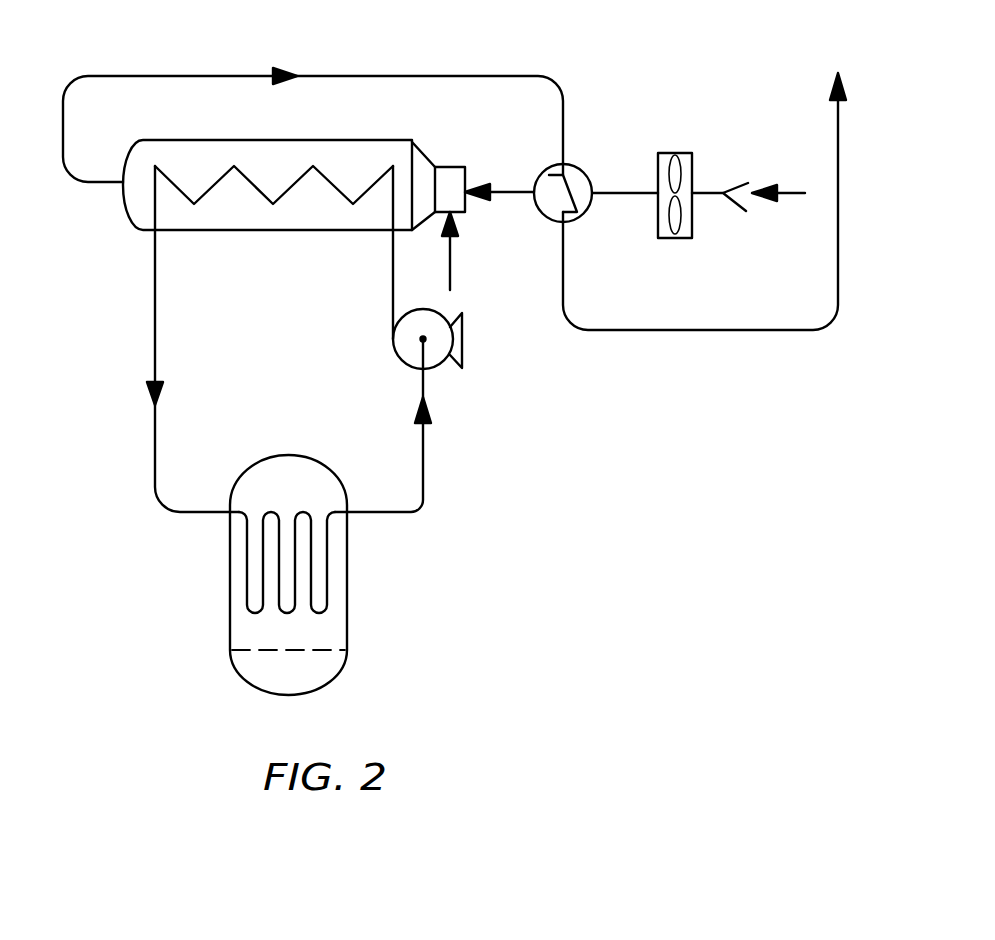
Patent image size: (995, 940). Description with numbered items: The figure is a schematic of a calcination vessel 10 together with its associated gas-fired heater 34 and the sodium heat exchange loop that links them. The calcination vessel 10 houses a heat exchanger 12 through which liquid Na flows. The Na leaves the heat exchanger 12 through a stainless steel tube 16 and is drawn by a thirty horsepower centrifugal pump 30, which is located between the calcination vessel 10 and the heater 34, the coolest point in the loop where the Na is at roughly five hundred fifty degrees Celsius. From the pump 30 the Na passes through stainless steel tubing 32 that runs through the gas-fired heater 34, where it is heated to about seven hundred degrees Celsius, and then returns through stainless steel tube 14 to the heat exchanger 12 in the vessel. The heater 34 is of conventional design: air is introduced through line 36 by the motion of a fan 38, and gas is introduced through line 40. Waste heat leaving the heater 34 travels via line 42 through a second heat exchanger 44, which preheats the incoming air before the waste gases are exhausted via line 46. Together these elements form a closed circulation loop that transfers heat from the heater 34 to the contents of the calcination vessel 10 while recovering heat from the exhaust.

The calcination vessel 10 is at (347, 600).
The heat exchanger 12 is at (247, 573).
The stainless steel tube 14 is at (152, 295).
The stainless steel tube 16 is at (398, 512).
The centrifugal pump 30 is at (438, 375).
The stainless steel tubing 32 is at (390, 222).
The gas-fired heater 34 is at (427, 157).
The line 36 is at (700, 190).
The fan 38 is at (683, 238).
The line 40 is at (450, 243).
The line 42 is at (63, 160).
The heat exchanger 44 is at (587, 173).
The line 46 is at (842, 298).